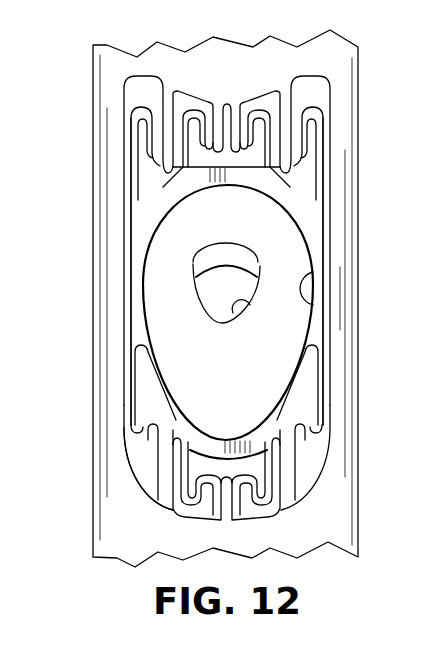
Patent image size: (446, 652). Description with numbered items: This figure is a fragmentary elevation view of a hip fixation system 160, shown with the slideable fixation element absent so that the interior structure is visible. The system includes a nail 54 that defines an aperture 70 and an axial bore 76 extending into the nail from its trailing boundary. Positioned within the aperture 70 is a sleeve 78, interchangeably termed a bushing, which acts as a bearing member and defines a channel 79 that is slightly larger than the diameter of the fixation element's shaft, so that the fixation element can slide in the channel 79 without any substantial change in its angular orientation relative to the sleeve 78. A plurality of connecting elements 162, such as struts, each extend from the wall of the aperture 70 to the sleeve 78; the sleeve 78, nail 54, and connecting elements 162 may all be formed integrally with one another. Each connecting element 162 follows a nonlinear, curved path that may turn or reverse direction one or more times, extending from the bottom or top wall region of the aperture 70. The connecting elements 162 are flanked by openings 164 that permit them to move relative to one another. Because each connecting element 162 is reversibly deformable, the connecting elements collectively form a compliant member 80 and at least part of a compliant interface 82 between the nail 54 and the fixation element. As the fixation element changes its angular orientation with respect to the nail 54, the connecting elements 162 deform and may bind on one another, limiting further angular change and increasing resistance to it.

The hip fixation system 160 is at (76, 81).
The nail 54 is at (92, 157).
The connecting elements 162 is at (258, 116).
The openings 164 is at (250, 163).
The sleeve 78 is at (305, 192).
The channel 79 is at (304, 276).
The axial bore 76 is at (237, 311).
The compliant member 80 is at (129, 433).
The compliant interface 82 is at (133, 472).
The aperture 70 is at (318, 456).